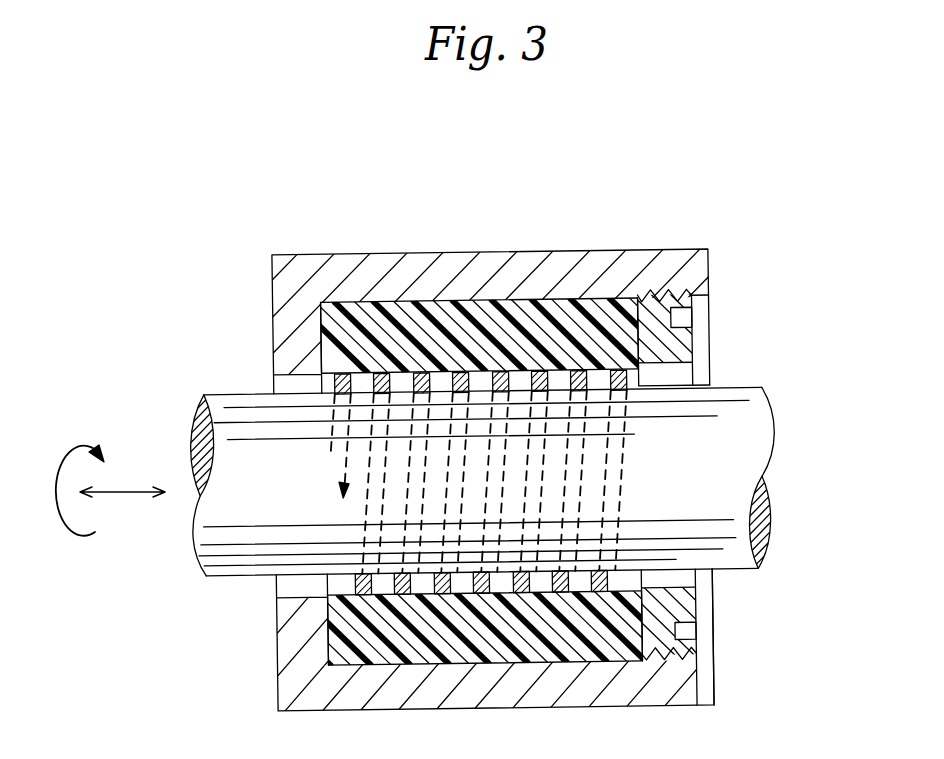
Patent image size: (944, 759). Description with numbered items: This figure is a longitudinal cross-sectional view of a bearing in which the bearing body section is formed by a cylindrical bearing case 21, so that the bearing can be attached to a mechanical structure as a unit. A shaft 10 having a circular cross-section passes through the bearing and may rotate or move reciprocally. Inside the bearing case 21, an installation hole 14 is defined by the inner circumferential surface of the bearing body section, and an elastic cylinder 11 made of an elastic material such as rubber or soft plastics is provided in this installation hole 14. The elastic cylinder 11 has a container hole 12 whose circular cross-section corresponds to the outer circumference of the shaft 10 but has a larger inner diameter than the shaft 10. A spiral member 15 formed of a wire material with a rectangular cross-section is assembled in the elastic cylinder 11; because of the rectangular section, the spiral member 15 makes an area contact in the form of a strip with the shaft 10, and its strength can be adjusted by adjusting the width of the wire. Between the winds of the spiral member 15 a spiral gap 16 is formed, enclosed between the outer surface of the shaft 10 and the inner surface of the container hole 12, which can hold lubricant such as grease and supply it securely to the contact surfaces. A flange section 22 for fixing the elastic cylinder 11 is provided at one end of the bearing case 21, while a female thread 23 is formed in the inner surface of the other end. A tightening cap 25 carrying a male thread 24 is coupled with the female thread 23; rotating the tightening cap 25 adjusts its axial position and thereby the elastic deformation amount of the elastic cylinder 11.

The shaft 10 is at (742, 452).
The elastic cylinder 11 is at (352, 632).
The container hole 12 is at (635, 580).
The installation hole 14 is at (362, 308).
The spiral member 15 is at (437, 332).
The spiral gap 16 is at (526, 372).
The bearing case 21 is at (630, 268).
The flange section 22 is at (290, 333).
The female thread 23 is at (705, 303).
The male thread 24 is at (683, 672).
The tightening cap 25 is at (697, 606).